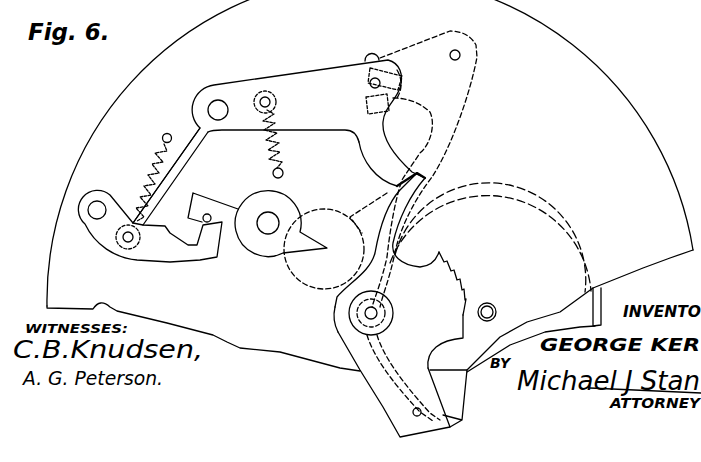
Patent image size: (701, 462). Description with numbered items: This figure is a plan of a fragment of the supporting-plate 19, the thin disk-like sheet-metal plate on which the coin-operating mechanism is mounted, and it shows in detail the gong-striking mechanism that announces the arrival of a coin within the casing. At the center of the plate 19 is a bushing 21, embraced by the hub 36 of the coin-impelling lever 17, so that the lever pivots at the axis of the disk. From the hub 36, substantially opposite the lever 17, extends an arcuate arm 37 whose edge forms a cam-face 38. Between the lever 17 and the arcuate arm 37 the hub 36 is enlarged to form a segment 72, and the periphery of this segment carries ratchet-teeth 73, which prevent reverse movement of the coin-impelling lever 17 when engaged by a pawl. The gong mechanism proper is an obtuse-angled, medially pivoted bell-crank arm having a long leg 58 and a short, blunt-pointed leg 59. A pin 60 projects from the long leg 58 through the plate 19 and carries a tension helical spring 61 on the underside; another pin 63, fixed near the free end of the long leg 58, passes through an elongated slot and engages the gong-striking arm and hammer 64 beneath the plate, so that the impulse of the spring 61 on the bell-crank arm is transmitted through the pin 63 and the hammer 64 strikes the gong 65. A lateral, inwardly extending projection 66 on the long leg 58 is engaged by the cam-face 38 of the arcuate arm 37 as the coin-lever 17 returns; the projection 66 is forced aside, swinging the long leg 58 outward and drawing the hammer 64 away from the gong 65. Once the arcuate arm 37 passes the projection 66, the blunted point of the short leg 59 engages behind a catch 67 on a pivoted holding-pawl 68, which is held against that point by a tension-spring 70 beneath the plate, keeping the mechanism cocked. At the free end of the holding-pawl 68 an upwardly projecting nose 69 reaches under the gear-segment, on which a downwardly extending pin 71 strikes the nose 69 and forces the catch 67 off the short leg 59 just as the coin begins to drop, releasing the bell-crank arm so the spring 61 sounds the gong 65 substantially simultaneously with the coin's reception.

The supporting-plate 19 is at (598, 102).
The long leg 58 is at (279, 141).
The short blunt-pointed leg 59 is at (182, 158).
The pin 60 is at (268, 92).
The tension helical spring 61 is at (290, 150).
The pin 63 is at (378, 78).
The gong-striking arm and hammer 64 is at (434, 167).
The lateral projection 66 is at (392, 164).
The arcuate arm 37 is at (411, 203).
The cam-face 38 is at (387, 203).
The hub 36 is at (331, 312).
The bushing 21 is at (397, 305).
The coin-impelling lever 17 is at (380, 412).
The segment 72 is at (462, 335).
The ratchet-teeth 73 is at (453, 265).
The gong 65 is at (579, 251).
The nose 69 is at (206, 228).
The pin 71 is at (208, 213).
The catch 67 is at (158, 233).
The holding-pawl 68 is at (155, 246).
The tension-spring 70 is at (147, 171).